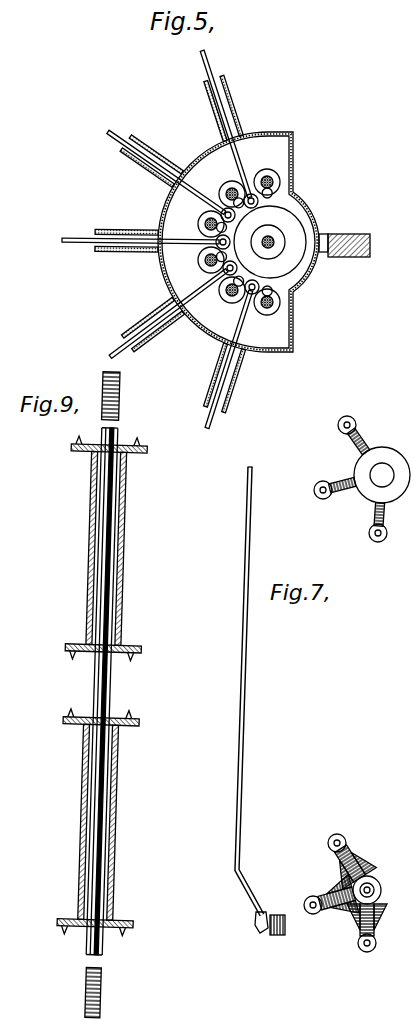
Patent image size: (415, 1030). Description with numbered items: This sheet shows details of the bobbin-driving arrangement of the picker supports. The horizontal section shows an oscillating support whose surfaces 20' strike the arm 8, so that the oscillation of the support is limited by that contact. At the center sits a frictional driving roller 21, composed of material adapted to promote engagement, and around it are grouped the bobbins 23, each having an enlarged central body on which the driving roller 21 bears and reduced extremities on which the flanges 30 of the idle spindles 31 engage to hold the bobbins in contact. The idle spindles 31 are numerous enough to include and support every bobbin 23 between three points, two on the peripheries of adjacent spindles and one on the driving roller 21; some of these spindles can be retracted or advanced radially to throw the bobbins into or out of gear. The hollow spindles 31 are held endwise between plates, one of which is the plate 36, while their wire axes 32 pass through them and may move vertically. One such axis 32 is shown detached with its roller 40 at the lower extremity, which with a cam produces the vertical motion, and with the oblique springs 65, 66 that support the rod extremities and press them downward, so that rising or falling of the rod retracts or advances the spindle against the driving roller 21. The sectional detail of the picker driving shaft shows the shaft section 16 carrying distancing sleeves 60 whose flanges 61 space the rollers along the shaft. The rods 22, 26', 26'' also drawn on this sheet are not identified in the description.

In FIG. 5, the arm 8 is at (340, 257).
In FIG. 9, the shaft section 16 is at (108, 690).
In FIG. 5, the surfaces 20' is at (240, 242).
In FIG. 5, the frictional driving rollers 21 is at (292, 228).
In FIG. 5, the rod 22 is at (209, 67).
In FIG. 5, the bobbins 23 is at (257, 207).
In FIG. 5, the rod 26' is at (167, 171).
In FIG. 5, the rod 26'' is at (168, 313).
In FIG. 5, the flanges 30 is at (233, 181).
In FIG. 5, the idle spindles 31 is at (232, 186).
In FIG. 5, the plate 36 is at (200, 268).
In FIG. 7, the axes 32 is at (244, 594).
In FIG. 7, the rollers 40 is at (272, 935).
In FIG. 9, the distancing sleeves 60 is at (124, 553).
In FIG. 9, the flanges 61 is at (150, 449).
In FIG. 7, the oblique spring 65 is at (362, 450).
In FIG. 7, the oblique spring 66 is at (330, 864).